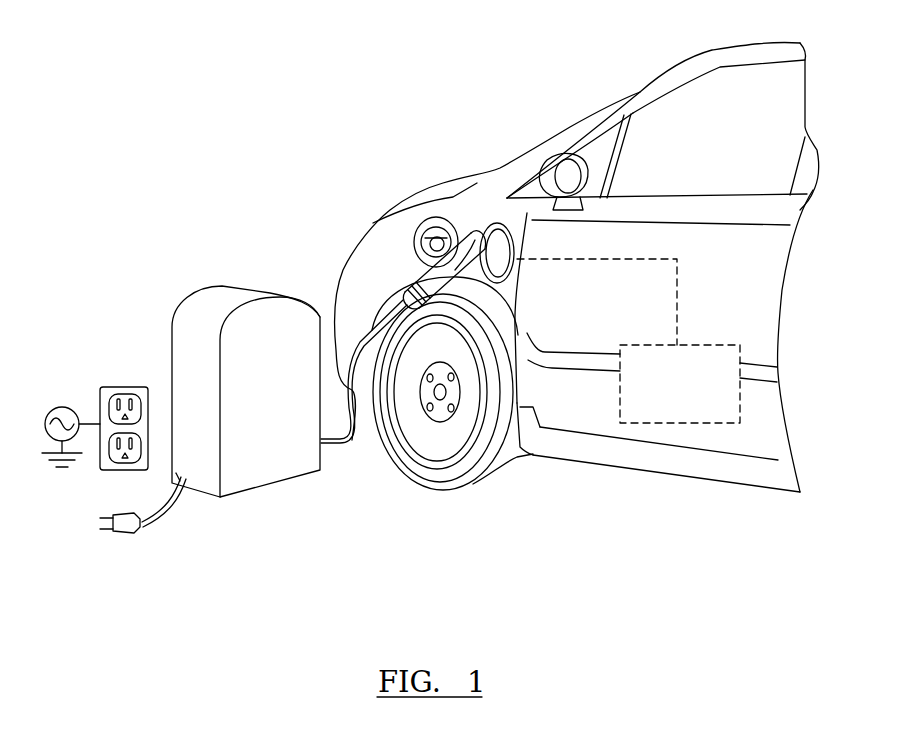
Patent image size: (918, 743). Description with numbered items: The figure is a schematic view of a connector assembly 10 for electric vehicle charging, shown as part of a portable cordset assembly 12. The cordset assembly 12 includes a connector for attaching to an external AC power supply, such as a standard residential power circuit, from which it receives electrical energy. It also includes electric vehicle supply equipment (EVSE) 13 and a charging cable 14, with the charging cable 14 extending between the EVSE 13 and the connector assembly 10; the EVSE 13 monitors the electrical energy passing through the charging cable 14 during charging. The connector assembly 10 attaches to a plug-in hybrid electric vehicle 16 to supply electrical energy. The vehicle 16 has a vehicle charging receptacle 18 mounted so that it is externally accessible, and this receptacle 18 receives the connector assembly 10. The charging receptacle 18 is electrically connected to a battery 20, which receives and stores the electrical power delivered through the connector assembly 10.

The connector assembly 10 is at (472, 220).
The cordset assembly 12 is at (121, 362).
The electric vehicle supply equipment (EVSE) 13 is at (283, 458).
The charging cable 14 is at (340, 453).
The plug-in hybrid electric vehicle 16 is at (665, 83).
The vehicle charging receptacle 18 is at (497, 220).
The battery 20 is at (690, 398).